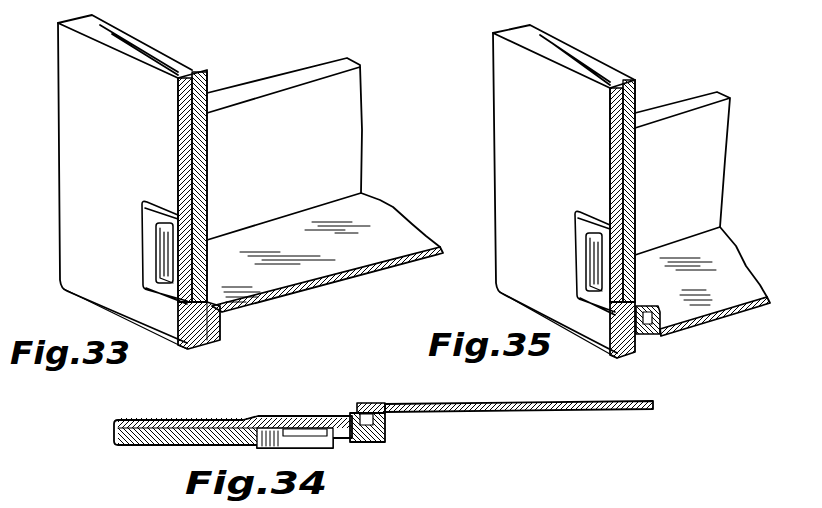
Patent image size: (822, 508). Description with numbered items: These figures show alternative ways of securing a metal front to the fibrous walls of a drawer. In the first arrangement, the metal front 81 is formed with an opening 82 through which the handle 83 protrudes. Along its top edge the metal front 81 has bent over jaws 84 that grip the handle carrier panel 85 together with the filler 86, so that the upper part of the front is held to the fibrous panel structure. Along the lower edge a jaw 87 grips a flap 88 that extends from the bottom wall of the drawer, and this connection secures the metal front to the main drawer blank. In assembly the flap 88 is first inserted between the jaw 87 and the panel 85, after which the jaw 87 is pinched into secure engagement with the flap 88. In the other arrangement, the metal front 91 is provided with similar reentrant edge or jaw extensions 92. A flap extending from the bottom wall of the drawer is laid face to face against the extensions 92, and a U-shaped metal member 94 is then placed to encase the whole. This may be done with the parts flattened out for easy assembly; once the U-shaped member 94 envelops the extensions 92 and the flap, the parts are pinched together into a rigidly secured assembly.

In FIG. 33, the metal front 81 is at (178, 118).
In FIG. 35, the metal front 81 is at (564, 191).
In FIG. 33, the opening 82 is at (160, 241).
In FIG. 35, the opening 82 is at (594, 262).
In FIG. 34, the opening 82 is at (295, 438).
In FIG. 33, the handle 83 is at (165, 283).
In FIG. 35, the handle 83 is at (595, 263).
In FIG. 33, the bent over jaws 84 is at (212, 95).
In FIG. 35, the bent over jaws 84 is at (701, 198).
In FIG. 33, the handle carrier panel 85 is at (205, 77).
In FIG. 35, the handle carrier panel 85 is at (622, 191).
In FIG. 34, the handle carrier panel 85 is at (233, 432).
In FIG. 33, the filler 86 is at (185, 78).
In FIG. 35, the filler 86 is at (616, 193).
In FIG. 33, the jaw 87 is at (219, 323).
In FIG. 33, the flap 88 is at (216, 306).
In FIG. 35, the metal front 91 is at (620, 325).
In FIG. 34, the metal front 91 is at (357, 440).
In FIG. 35, the reentrant edge or jaw extensions 92 is at (652, 332).
In FIG. 34, the reentrant edge or jaw extensions 92 is at (386, 406).
In FIG. 35, the U-shaped metal member 94 is at (645, 312).
In FIG. 34, the U-shaped metal member 94 is at (357, 408).